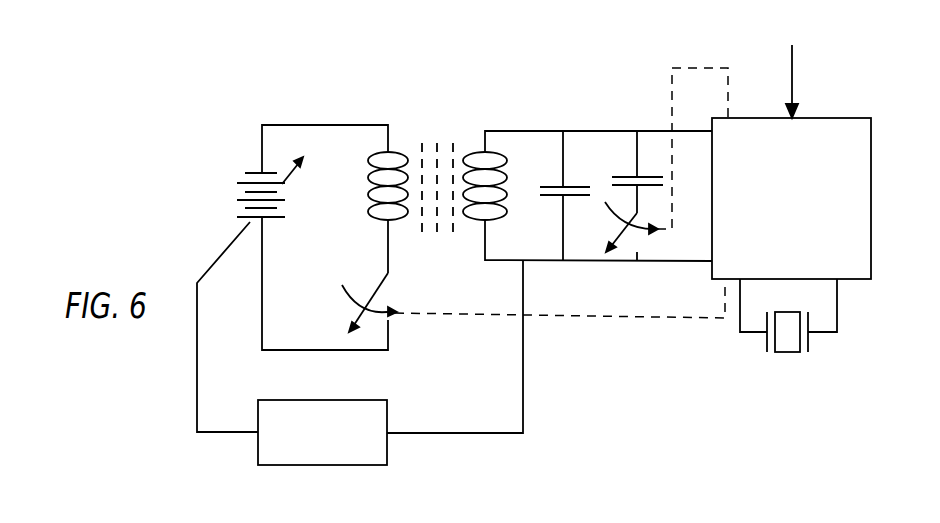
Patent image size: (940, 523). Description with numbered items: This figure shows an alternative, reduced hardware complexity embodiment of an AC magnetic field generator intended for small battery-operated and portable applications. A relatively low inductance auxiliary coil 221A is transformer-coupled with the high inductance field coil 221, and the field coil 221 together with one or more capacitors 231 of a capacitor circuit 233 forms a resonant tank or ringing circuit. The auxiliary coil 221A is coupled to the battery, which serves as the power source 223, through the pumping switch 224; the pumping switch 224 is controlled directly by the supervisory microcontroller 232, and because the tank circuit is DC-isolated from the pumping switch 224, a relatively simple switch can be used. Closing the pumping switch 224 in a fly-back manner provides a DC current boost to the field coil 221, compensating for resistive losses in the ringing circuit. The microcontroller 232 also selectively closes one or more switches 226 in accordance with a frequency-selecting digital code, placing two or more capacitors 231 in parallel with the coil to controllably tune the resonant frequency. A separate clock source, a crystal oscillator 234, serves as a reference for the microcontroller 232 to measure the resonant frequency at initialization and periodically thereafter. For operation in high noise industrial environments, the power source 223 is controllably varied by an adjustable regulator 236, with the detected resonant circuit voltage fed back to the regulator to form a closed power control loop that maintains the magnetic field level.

The field coil 221 is at (500, 168).
The auxiliary coil 221A is at (368, 208).
The power source 223 is at (237, 191).
The pumping switch 224 is at (355, 307).
The switches 226 is at (628, 229).
The capacitors 231 is at (563, 201).
The supervisory microcontroller 232 is at (871, 208).
The capacitor circuit 233 is at (590, 150).
The crystal oscillator 234 is at (787, 353).
The adjustable regulator 236 is at (322, 467).